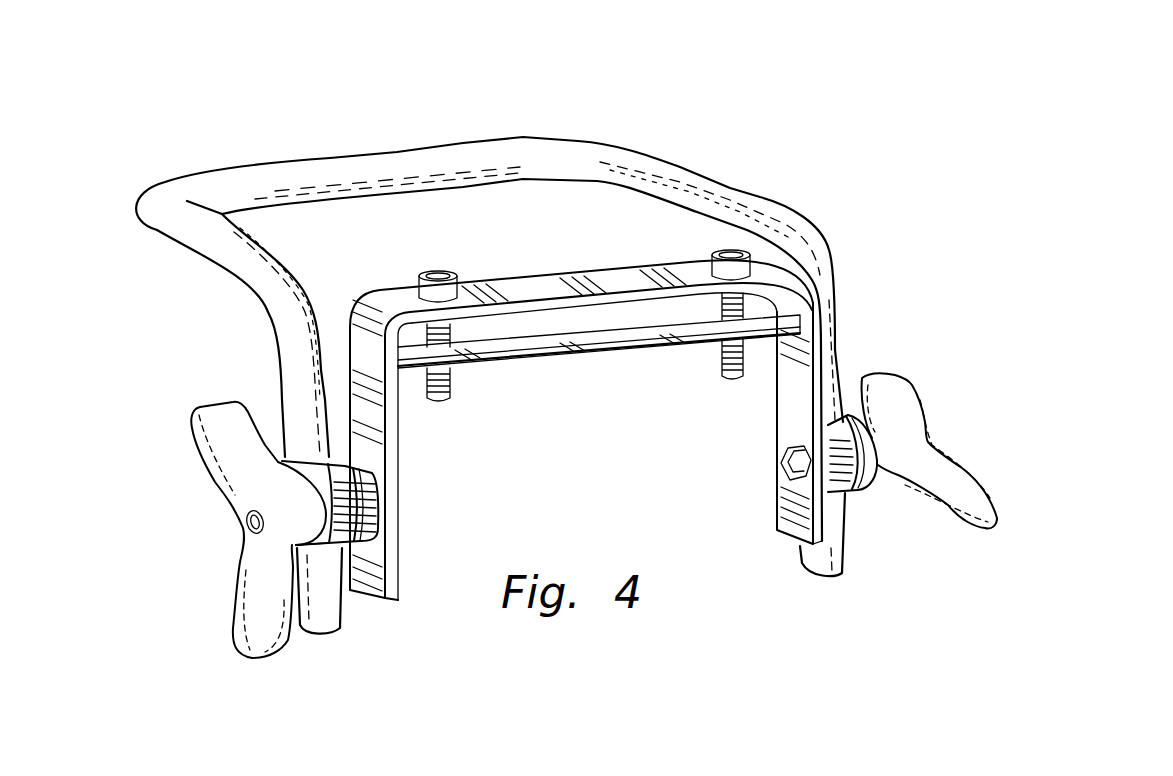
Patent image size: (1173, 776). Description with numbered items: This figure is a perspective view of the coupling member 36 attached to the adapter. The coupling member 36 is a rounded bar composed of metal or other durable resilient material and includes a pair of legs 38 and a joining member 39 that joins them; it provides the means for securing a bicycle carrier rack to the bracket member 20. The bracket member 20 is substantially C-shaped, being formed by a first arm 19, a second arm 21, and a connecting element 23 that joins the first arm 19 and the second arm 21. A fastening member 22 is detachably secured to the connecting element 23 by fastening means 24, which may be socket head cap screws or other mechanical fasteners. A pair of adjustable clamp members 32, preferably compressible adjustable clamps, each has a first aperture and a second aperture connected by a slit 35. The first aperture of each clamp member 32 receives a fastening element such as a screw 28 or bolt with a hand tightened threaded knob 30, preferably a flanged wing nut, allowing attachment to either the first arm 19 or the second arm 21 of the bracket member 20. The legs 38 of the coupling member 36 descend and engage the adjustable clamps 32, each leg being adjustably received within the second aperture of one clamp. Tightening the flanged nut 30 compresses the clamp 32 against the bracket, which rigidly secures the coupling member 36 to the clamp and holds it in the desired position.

The coupling member 36 is at (527, 367).
The joining member 39 is at (373, 167).
The legs 38 is at (297, 373).
The bracket member 20 is at (586, 416).
The connecting element 23 is at (575, 280).
The first arm 19 is at (397, 460).
The second arm 21 is at (783, 422).
The fastening member 22 is at (530, 357).
The fastening means 24 is at (453, 393).
The screw 28 is at (783, 464).
The hand tightened threaded knob 30 is at (253, 555).
The adjustable clamp members 32 is at (370, 517).
The slit 35 is at (347, 540).